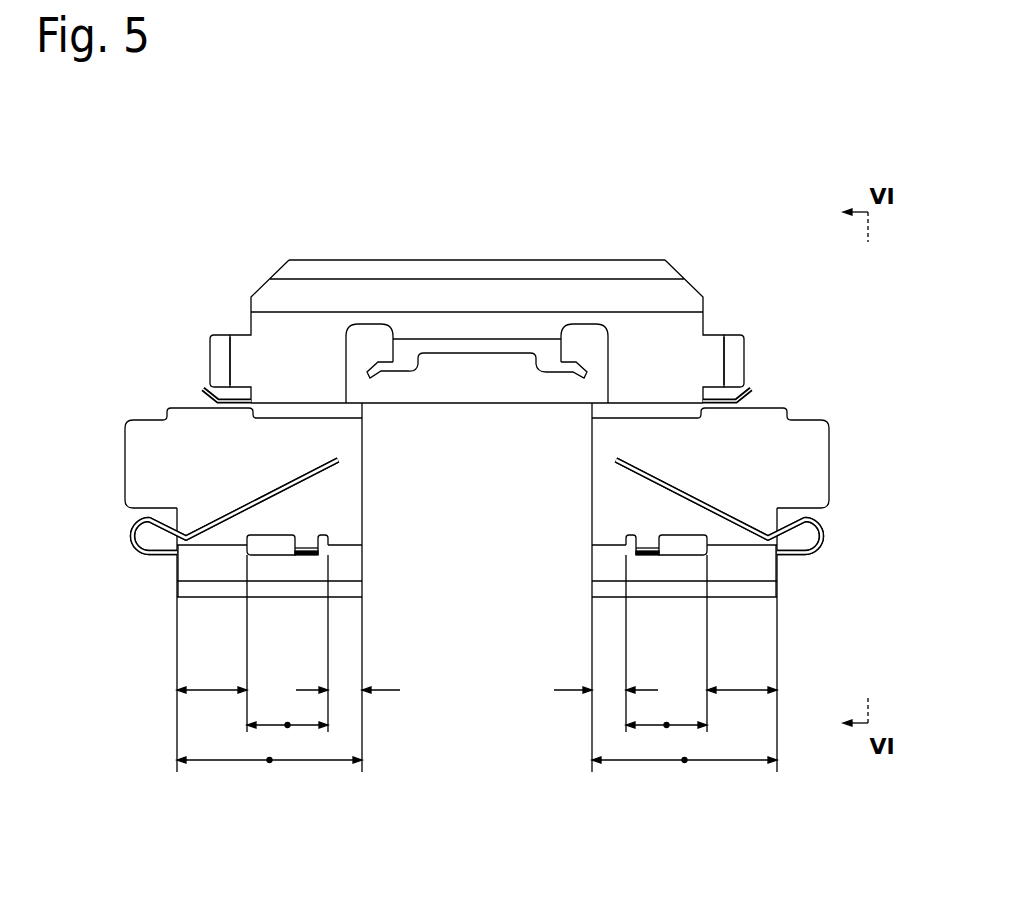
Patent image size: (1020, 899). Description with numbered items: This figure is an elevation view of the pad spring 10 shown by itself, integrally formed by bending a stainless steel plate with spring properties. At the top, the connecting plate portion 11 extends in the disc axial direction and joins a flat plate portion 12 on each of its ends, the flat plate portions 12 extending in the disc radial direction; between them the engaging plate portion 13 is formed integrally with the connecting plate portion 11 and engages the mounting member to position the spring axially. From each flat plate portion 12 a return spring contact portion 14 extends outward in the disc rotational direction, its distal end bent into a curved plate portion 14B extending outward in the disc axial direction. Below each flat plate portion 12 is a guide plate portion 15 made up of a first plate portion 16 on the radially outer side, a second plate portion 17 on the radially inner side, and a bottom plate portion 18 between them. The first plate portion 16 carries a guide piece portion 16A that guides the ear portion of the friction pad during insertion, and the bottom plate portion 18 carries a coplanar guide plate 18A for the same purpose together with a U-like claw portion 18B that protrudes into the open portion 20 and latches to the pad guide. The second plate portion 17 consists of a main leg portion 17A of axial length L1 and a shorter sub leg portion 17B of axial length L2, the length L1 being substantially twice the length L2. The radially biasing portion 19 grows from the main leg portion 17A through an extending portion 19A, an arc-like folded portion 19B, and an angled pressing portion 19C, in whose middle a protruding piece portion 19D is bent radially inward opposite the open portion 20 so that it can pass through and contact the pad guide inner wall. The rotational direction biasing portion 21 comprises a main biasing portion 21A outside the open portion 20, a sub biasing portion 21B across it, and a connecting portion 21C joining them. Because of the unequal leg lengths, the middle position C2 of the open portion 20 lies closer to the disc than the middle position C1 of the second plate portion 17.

The pad spring 10 is at (480, 250).
The connecting plate portion 11 is at (395, 297).
The flat plate portion 12 is at (651, 355).
The engaging plate portion 13 is at (477, 330).
The return spring contact portion 14 is at (222, 349).
The curved plate portion 14B is at (222, 367).
The guide plate portion 15 is at (371, 433).
The first plate portion 16 is at (359, 401).
The guide piece portion 16A is at (205, 393).
The second plate portion 17 is at (340, 540).
The main leg portion 17A is at (226, 543).
The sub leg portion 17B is at (350, 545).
The bottom plate portion 18 is at (213, 450).
The guide plate 18A is at (150, 474).
The claw portion 18B is at (313, 538).
The radially biasing portion 19 is at (126, 551).
The extending portion 19A is at (160, 557).
The folded portion 19B is at (129, 532).
The pressing portion 19C is at (290, 478).
The protruding piece portion 19D is at (267, 495).
The open portion 20 is at (263, 553).
The rotational direction biasing portion 21 is at (371, 559).
The main biasing portion 21A is at (209, 565).
The sub biasing portion 21B is at (347, 572).
The connecting portion 21C is at (300, 570).
The length of main leg portion L1 is at (477, 676).
The length of sub leg portion L2 is at (477, 675).
The middle position of second plate portion C1 is at (477, 747).
The middle position of open portion C2 is at (477, 711).